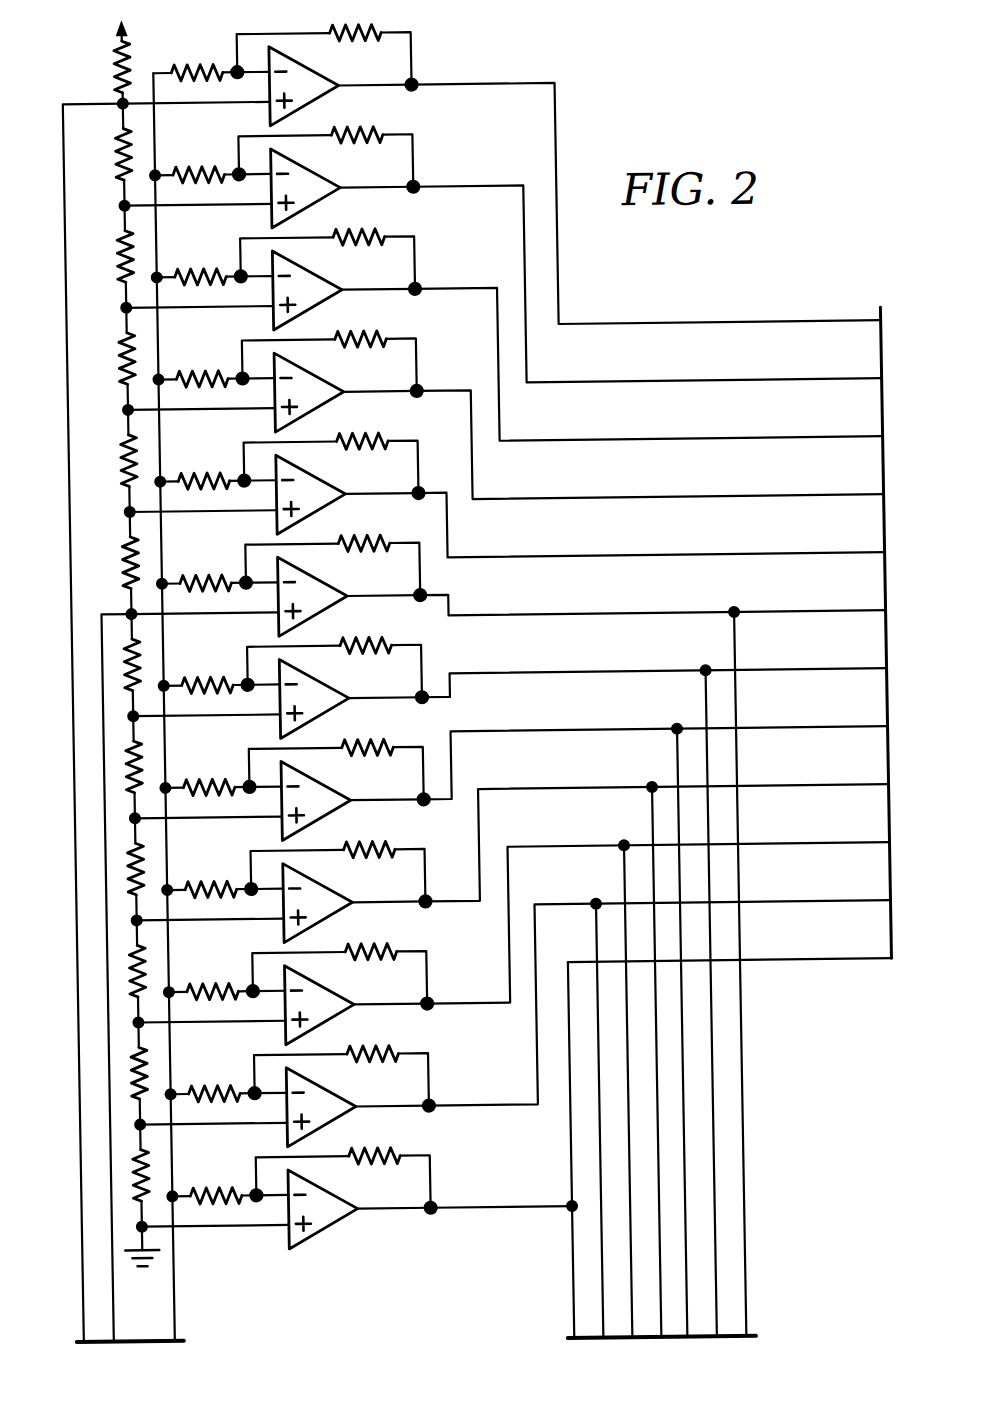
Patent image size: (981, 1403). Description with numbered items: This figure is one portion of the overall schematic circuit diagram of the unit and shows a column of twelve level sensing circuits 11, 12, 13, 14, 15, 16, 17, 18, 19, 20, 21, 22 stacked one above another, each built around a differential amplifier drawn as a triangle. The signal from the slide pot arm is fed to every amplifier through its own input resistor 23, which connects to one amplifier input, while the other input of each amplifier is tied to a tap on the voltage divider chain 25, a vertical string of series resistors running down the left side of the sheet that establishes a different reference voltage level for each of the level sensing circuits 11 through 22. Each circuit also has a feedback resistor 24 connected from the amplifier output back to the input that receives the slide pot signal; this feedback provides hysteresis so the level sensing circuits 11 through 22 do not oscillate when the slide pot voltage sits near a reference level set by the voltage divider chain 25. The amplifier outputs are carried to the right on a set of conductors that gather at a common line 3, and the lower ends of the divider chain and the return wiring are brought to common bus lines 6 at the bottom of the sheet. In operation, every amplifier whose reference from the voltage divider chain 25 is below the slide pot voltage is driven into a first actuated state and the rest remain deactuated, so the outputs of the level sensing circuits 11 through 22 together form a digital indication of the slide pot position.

The output bus conductor 3 is at (894, 632).
The ground bus 6 is at (416, 1351).
The level sensing circuit 11 is at (313, 1198).
The level sensing circuit 12 is at (313, 1096).
The level sensing circuit 13 is at (313, 994).
The level sensing circuit 14 is at (313, 892).
The level sensing circuit 15 is at (313, 790).
The level sensing circuit 16 is at (313, 688).
The level sensing circuit 17 is at (313, 586).
The level sensing circuit 18 is at (313, 484).
The level sensing circuit 19 is at (313, 382).
The level sensing circuit 20 is at (313, 280).
The level sensing circuit 21 is at (313, 178).
The level sensing circuit 22 is at (313, 76).
The resistor 23 is at (208, 617).
The resistor 24 is at (337, 620).
The voltage divider chain 25 is at (128, 409).